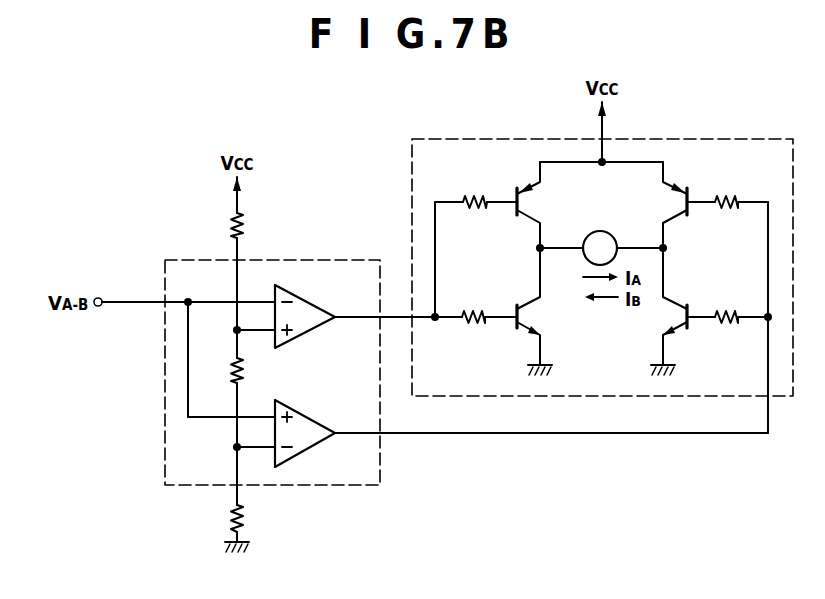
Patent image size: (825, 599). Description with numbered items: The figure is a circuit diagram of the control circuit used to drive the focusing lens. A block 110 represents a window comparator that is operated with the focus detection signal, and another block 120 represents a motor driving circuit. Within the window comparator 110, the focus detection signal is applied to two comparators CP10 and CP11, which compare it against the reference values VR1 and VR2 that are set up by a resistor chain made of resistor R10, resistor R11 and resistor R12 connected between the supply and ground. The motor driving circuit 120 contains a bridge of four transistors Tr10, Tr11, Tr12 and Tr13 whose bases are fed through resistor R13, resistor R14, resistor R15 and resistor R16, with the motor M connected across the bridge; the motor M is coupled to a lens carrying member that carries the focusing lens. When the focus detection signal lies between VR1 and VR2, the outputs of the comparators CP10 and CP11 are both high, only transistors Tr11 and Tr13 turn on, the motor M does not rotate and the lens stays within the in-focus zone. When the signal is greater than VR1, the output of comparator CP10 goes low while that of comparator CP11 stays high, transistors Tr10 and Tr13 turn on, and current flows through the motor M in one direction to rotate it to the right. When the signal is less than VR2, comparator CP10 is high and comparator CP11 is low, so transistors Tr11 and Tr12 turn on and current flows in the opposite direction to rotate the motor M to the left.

The window comparator 110 is at (325, 259).
The motor driving circuit 120 is at (722, 138).
The resistor R10 is at (232, 230).
The resistor R11 is at (232, 372).
The resistor R12 is at (232, 522).
The resistor R13 is at (470, 210).
The resistor R14 is at (474, 306).
The resistor R15 is at (726, 210).
The resistor R16 is at (724, 310).
The comparator CP10 is at (310, 336).
The comparator CP11 is at (308, 442).
The reference value VR1 is at (242, 333).
The reference value VR2 is at (233, 449).
The transistor Tr10 is at (524, 198).
The transistor Tr11 is at (528, 320).
The transistor Tr12 is at (681, 198).
The transistor Tr13 is at (676, 320).
The motor M is at (600, 248).